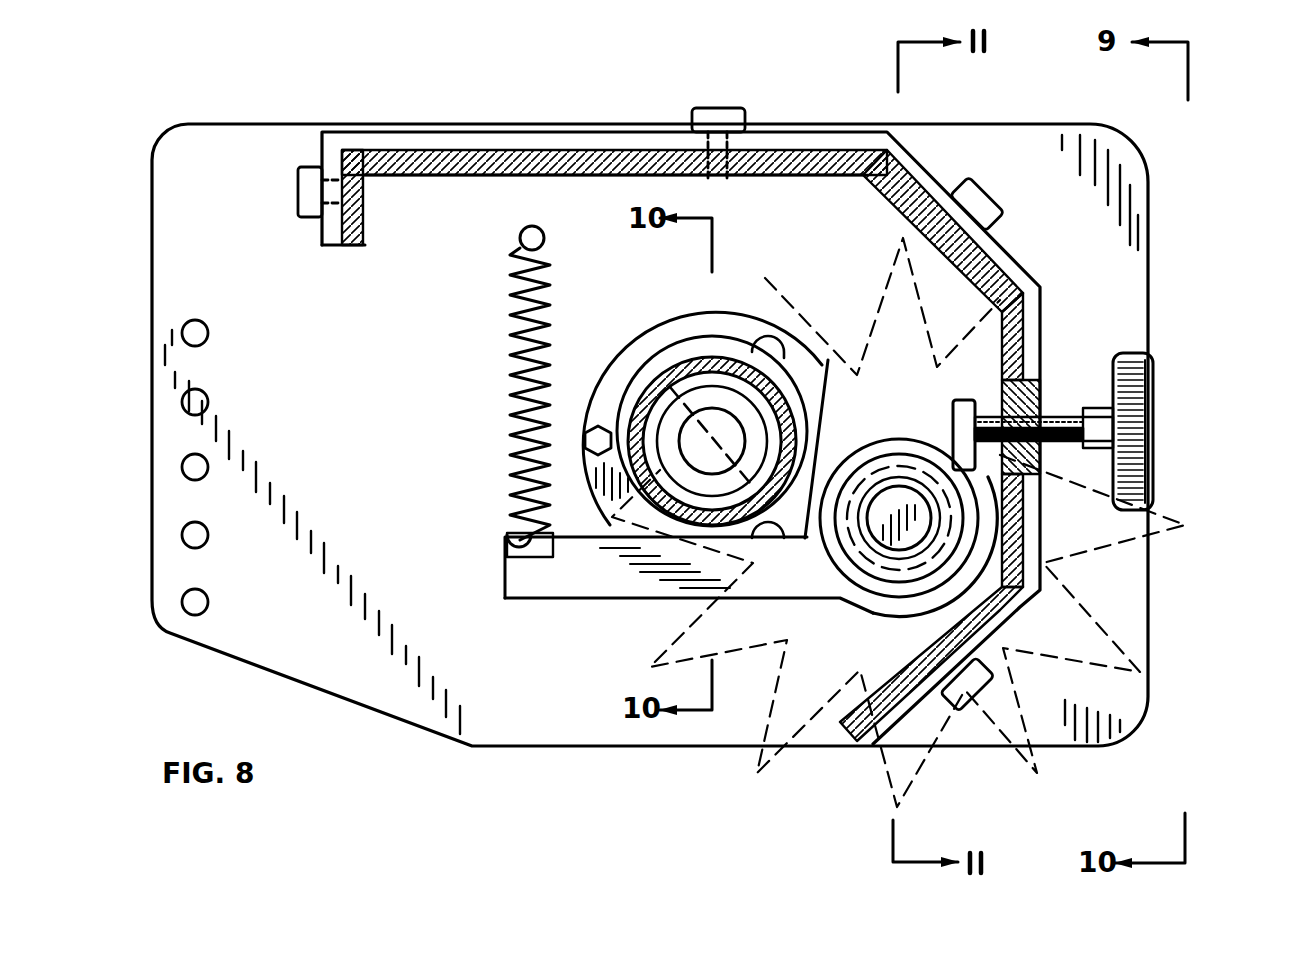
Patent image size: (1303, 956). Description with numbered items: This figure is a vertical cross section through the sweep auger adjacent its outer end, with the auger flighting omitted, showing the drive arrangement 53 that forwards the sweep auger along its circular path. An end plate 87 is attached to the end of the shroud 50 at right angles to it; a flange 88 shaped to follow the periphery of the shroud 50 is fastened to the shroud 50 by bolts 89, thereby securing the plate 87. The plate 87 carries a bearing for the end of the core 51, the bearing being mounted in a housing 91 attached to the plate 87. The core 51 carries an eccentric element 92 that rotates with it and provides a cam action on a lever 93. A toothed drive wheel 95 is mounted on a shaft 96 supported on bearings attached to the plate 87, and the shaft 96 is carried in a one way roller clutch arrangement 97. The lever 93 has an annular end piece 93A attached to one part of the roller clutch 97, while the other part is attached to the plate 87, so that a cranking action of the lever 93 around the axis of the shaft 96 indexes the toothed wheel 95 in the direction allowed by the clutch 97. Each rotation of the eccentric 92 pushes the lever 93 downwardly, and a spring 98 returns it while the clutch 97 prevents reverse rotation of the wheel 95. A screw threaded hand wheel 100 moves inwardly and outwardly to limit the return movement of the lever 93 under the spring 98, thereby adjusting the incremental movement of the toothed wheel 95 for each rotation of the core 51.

The end plate 87 is at (247, 148).
The flange 88 is at (915, 172).
The bolts 89 is at (298, 190).
The shroud 50 is at (800, 178).
The spring 98 is at (506, 372).
The lever 93 is at (590, 590).
The annular end piece 93A is at (882, 610).
The housing 91 is at (627, 358).
The eccentric element 92 is at (686, 345).
The core 51 is at (648, 400).
The shaft 96 is at (900, 500).
The one way roller clutch arrangement 97 is at (822, 562).
The hand wheel 100 is at (1155, 392).
The toothed drive wheel 95 is at (750, 768).
The drive system 53 is at (1192, 705).